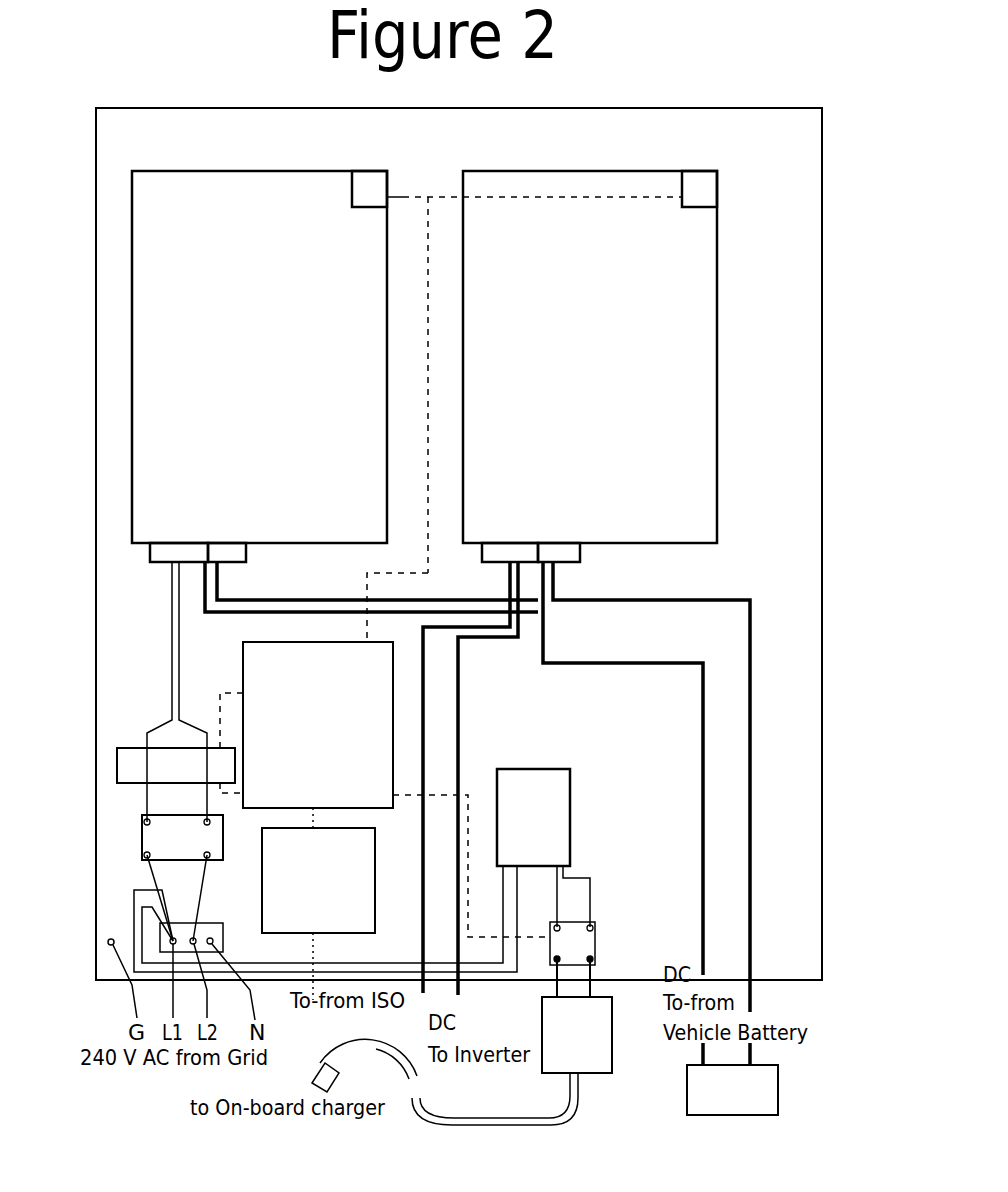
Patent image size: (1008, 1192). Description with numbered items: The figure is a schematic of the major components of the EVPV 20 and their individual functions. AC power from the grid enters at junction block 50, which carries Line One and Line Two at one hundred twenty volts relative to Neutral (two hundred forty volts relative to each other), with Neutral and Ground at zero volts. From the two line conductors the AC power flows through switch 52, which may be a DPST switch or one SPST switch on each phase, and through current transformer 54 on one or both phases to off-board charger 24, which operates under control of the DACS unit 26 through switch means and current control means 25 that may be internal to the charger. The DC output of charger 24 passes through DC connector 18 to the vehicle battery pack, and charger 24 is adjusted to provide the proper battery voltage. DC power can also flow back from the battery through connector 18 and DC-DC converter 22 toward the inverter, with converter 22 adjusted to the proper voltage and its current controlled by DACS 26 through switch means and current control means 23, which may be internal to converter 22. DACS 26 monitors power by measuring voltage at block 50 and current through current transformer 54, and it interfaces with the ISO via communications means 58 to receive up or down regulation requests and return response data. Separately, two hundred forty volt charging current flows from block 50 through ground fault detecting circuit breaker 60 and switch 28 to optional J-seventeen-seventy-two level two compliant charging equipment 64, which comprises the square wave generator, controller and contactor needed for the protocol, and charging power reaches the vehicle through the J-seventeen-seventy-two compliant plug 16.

The EVPV 20 is at (512, 148).
The switch means and current control means 25 is at (267, 172).
The switch means and current control means 23 is at (695, 170).
The off-board charger 24 is at (242, 261).
The DC-DC converter 22 is at (542, 261).
The DACS unit 26 is at (318, 737).
The current transformer 54 is at (191, 782).
The switch 52 is at (191, 847).
The communications means 58 is at (329, 896).
The ground fault detecting circuit breaker 60 is at (549, 824).
The switch 28 is at (597, 922).
The junction block 50 is at (205, 923).
The J1772 level 2-compliant charging equipment 64 is at (589, 1047).
The DC connector 18 is at (746, 1107).
The J1772-compliant plug 16 is at (445, 1082).